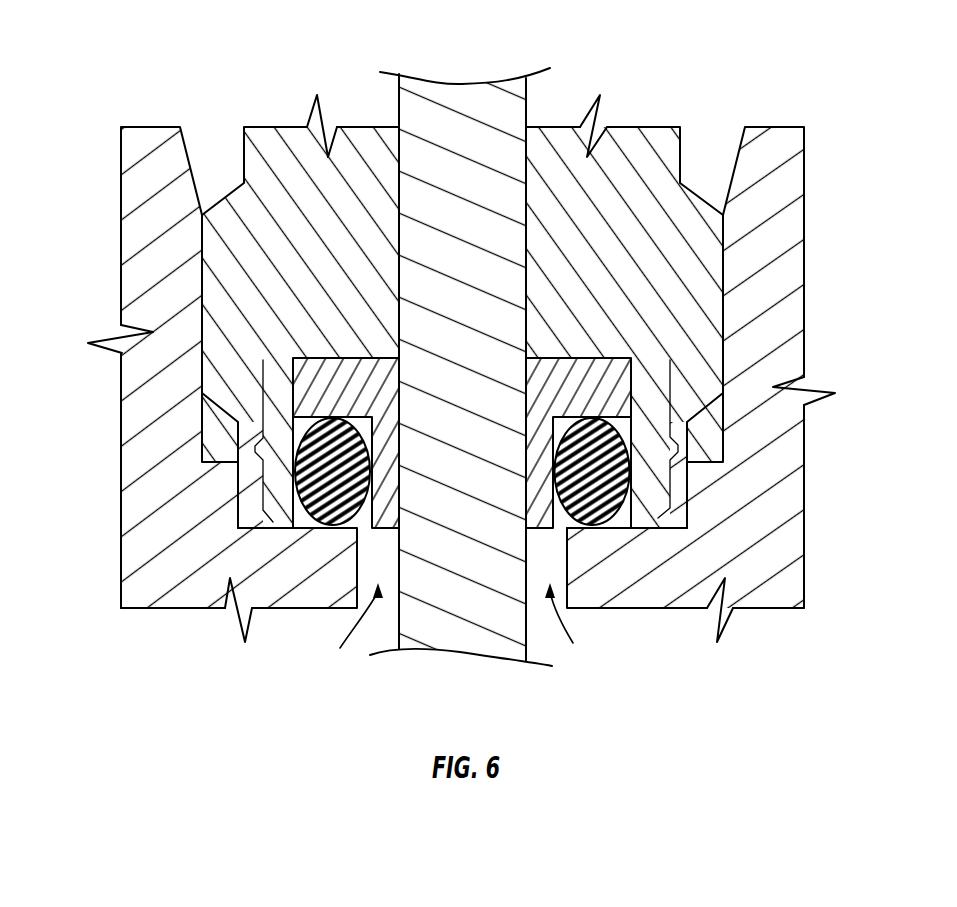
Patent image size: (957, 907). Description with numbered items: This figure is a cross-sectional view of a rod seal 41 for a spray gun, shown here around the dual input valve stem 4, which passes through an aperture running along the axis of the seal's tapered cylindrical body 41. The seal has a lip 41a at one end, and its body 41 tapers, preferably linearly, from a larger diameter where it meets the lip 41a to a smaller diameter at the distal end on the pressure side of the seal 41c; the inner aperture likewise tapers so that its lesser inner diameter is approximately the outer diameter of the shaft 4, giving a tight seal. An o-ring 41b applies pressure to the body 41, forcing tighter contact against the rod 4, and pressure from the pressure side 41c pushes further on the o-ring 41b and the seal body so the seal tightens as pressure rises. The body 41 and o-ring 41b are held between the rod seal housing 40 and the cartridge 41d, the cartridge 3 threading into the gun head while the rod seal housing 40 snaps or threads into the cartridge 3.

The cartridge 3 is at (133, 187).
The dual input valve stem 4 is at (442, 97).
The rod seal housing 40 is at (276, 150).
The rod seal 41 is at (255, 446).
The lip 41a is at (310, 380).
The o-ring 41b is at (303, 480).
The pressure side of the seal 41c is at (455, 627).
The cartridges 41d is at (188, 597).